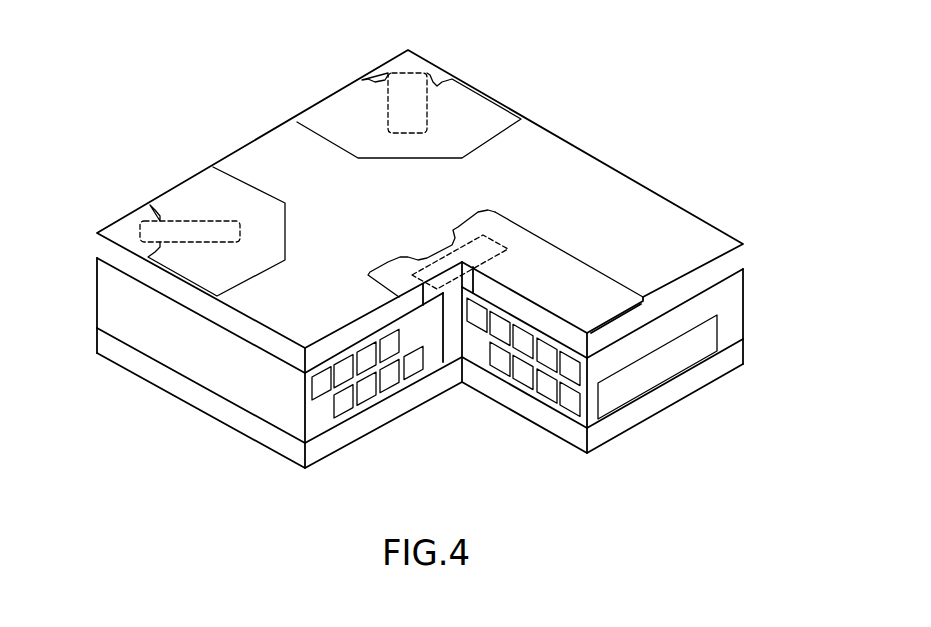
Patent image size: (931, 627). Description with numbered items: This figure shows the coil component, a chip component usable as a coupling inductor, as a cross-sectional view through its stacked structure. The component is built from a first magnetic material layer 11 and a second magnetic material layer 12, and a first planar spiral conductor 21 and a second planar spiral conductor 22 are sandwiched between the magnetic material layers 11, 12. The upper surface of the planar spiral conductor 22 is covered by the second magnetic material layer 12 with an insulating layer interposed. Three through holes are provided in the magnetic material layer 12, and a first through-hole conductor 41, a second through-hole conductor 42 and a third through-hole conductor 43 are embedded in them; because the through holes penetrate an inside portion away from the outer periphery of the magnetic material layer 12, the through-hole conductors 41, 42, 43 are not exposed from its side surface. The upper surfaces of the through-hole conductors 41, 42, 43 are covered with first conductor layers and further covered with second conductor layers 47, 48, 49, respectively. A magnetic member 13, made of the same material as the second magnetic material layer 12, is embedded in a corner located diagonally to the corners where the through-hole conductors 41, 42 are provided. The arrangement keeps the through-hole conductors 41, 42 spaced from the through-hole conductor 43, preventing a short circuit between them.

The first magnetic material layer 11 is at (740, 349).
The second magnetic material layer 12 is at (740, 255).
The magnetic member 13 is at (740, 307).
The first planar spiral conductor 21 is at (577, 402).
The second planar spiral conductor 22 is at (573, 372).
The first through-hole conductor 41 is at (397, 121).
The second through-hole conductor 42 is at (202, 242).
The third through-hole conductor 43 is at (483, 250).
The second conductor layer 47 is at (480, 110).
The second conductor layer 48 is at (202, 200).
The second conductor layer 49 is at (580, 285).